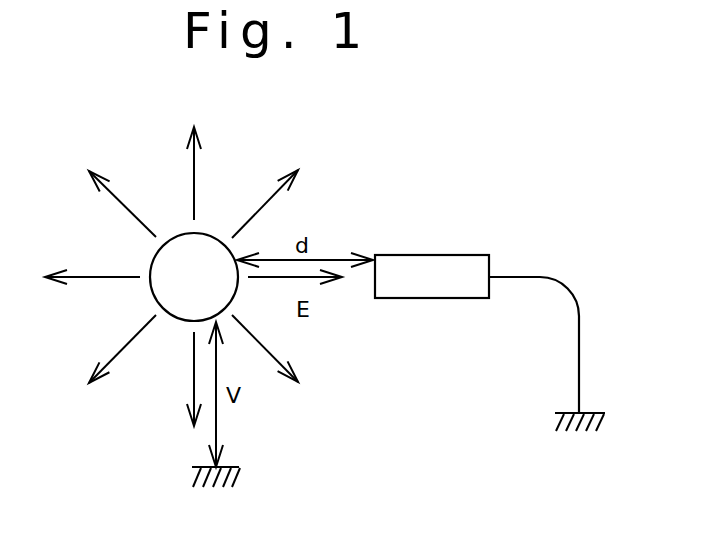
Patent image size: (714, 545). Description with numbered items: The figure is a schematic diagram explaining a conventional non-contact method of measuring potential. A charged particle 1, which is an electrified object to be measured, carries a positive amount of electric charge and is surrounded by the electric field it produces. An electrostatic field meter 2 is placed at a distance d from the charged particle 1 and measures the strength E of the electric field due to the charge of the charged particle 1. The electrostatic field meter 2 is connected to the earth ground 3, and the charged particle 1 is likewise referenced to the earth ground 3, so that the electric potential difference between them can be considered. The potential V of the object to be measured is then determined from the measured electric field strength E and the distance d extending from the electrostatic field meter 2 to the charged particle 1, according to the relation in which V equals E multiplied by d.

The charged particle 1 is at (203, 250).
The electrostatic field meter 2 is at (446, 292).
The earth ground 3 is at (232, 468).